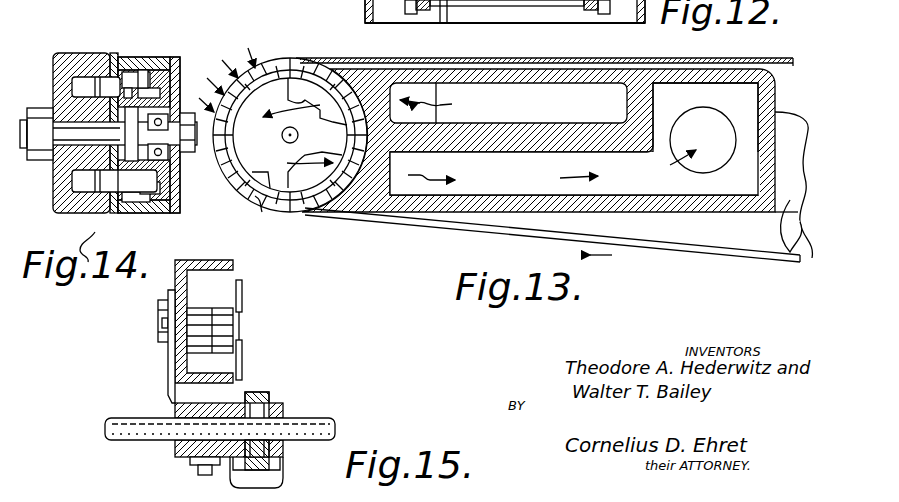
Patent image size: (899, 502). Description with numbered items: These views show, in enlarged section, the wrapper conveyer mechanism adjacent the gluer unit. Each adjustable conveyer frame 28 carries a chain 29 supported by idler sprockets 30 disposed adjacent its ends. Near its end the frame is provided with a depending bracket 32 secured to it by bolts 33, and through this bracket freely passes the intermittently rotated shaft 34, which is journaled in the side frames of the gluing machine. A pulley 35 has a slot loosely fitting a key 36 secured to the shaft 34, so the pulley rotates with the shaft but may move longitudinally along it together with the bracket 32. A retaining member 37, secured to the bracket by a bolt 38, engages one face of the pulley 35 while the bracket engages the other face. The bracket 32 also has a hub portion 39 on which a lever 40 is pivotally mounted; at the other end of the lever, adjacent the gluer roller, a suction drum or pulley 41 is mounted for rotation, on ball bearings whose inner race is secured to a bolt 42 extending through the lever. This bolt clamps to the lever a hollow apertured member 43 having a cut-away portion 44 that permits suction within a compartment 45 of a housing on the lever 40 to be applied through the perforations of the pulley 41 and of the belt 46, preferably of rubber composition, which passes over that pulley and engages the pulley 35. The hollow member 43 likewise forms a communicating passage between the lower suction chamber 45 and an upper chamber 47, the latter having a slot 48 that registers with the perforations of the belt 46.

In FIG. 15, the adjustable conveyer frame 28 is at (176, 270).
In FIG. 15, the chain 29 is at (242, 284).
In FIG. 15, the idler sprocket 30 is at (240, 302).
In FIG. 15, the depending bracket 32 is at (168, 375).
In FIG. 15, the bolt 33 is at (158, 305).
In FIG. 15, the intermittently rotated shaft 34 is at (128, 434).
In FIG. 15, the pulley 35 is at (276, 460).
In FIG. 15, the key 36 is at (305, 418).
In FIG. 15, the retaining member 37 is at (270, 452).
In FIG. 15, the bolt 38 is at (200, 472).
In FIG. 15, the hub portion 39 is at (240, 400).
In FIG. 13, the lever 40 is at (790, 206).
In FIG. 14, the lever 40 is at (95, 56).
In FIG. 15, the lever 40 is at (262, 398).
In FIG. 14, the suction drum or pulley 41 is at (166, 60).
In FIG. 13, the bolt 42 is at (225, 80).
In FIG. 14, the bolt 42 is at (165, 135).
In FIG. 13, the hollow apertured member 43 is at (252, 196).
In FIG. 14, the hollow apertured member 43 is at (128, 58).
In FIG. 13, the cut-away portion 44 is at (252, 72).
In FIG. 13, the suction compartment 45 is at (503, 180).
In FIG. 14, the suction compartment 45 is at (80, 182).
In FIG. 13, the belt 46 is at (300, 70).
In FIG. 13, the upper chamber 47 is at (528, 95).
In FIG. 14, the upper chamber 47 is at (80, 88).
In FIG. 13, the slot 48 is at (480, 98).